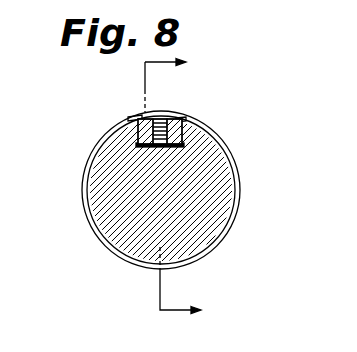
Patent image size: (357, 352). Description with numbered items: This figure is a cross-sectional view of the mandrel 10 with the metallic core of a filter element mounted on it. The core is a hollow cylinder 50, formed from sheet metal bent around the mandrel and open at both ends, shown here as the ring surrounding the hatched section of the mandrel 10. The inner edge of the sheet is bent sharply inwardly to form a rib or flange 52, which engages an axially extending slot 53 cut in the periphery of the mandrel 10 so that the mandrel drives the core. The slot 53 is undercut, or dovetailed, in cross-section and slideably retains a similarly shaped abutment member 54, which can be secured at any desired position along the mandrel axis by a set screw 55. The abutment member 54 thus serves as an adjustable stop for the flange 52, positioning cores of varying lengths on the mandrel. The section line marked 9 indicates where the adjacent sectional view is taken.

The mandrel 10 is at (118, 207).
The hollow cylinder 50 is at (98, 143).
The rib or flange 52 is at (134, 112).
The axially extending slot 53 is at (200, 117).
The abutment member 54 is at (184, 137).
The set screw 55 is at (170, 116).
The section line 9- 9 is at (181, 187).